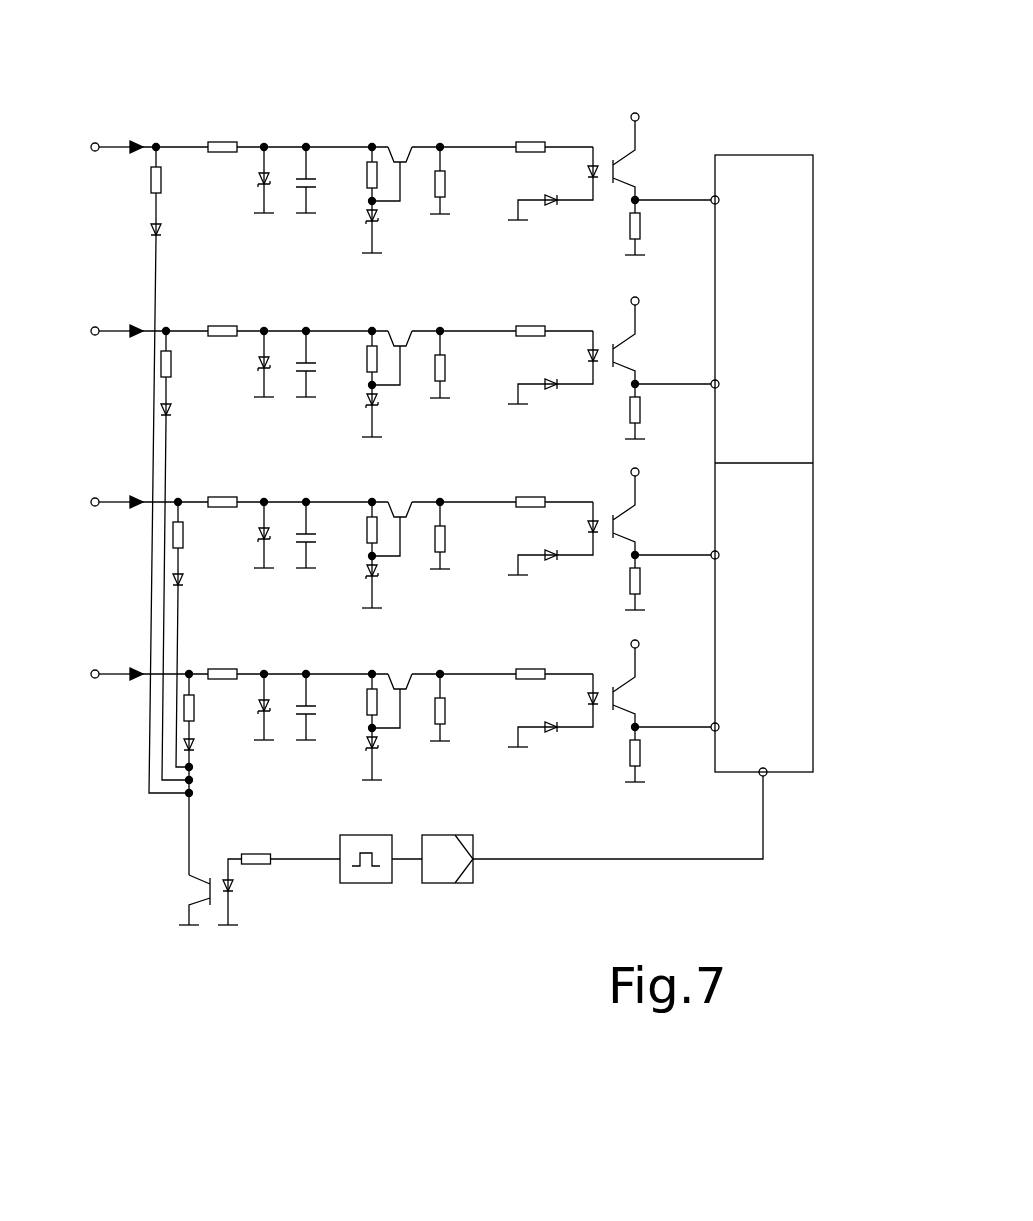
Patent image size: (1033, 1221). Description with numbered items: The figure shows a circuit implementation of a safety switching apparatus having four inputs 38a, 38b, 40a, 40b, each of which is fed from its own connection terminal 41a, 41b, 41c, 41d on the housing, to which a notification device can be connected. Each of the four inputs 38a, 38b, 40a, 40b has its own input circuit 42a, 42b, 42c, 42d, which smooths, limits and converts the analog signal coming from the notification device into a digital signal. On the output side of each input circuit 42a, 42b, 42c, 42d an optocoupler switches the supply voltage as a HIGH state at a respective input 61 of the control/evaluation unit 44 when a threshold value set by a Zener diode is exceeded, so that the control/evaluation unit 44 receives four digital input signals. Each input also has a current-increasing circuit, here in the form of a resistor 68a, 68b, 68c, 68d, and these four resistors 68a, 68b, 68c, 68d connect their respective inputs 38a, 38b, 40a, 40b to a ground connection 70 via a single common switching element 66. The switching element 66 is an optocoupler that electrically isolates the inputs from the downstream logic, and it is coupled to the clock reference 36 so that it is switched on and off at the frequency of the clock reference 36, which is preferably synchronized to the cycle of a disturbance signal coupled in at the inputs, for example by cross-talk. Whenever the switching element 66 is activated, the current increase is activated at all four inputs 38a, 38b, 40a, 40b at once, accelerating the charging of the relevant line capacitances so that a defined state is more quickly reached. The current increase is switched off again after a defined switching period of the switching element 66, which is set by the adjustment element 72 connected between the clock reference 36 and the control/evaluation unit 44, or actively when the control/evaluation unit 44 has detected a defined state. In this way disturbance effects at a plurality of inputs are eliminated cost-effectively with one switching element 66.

The connection terminal 41a is at (95, 143).
The connection terminal 41b is at (92, 328).
The connection terminal 41c is at (90, 499).
The connection terminal 41d is at (88, 671).
The input 38a is at (140, 143).
The input 38b is at (131, 499).
The input 40a is at (132, 328).
The input 40b is at (131, 671).
The input circuit 42a is at (404, 128).
The input circuit 42b is at (378, 310).
The input circuit 42c is at (370, 487).
The input circuit 42d is at (362, 655).
The resistor 68a is at (162, 180).
The resistor 68b is at (172, 365).
The resistor 68c is at (184, 535).
The resistor 68d is at (195, 707).
The input of the control/evaluation unit 61 is at (713, 198).
The control/evaluation unit 44 is at (770, 155).
The ground connection 70 is at (190, 932).
The switching element 66 is at (212, 922).
The clock reference 36 is at (372, 873).
The adjustment element 72 is at (445, 885).